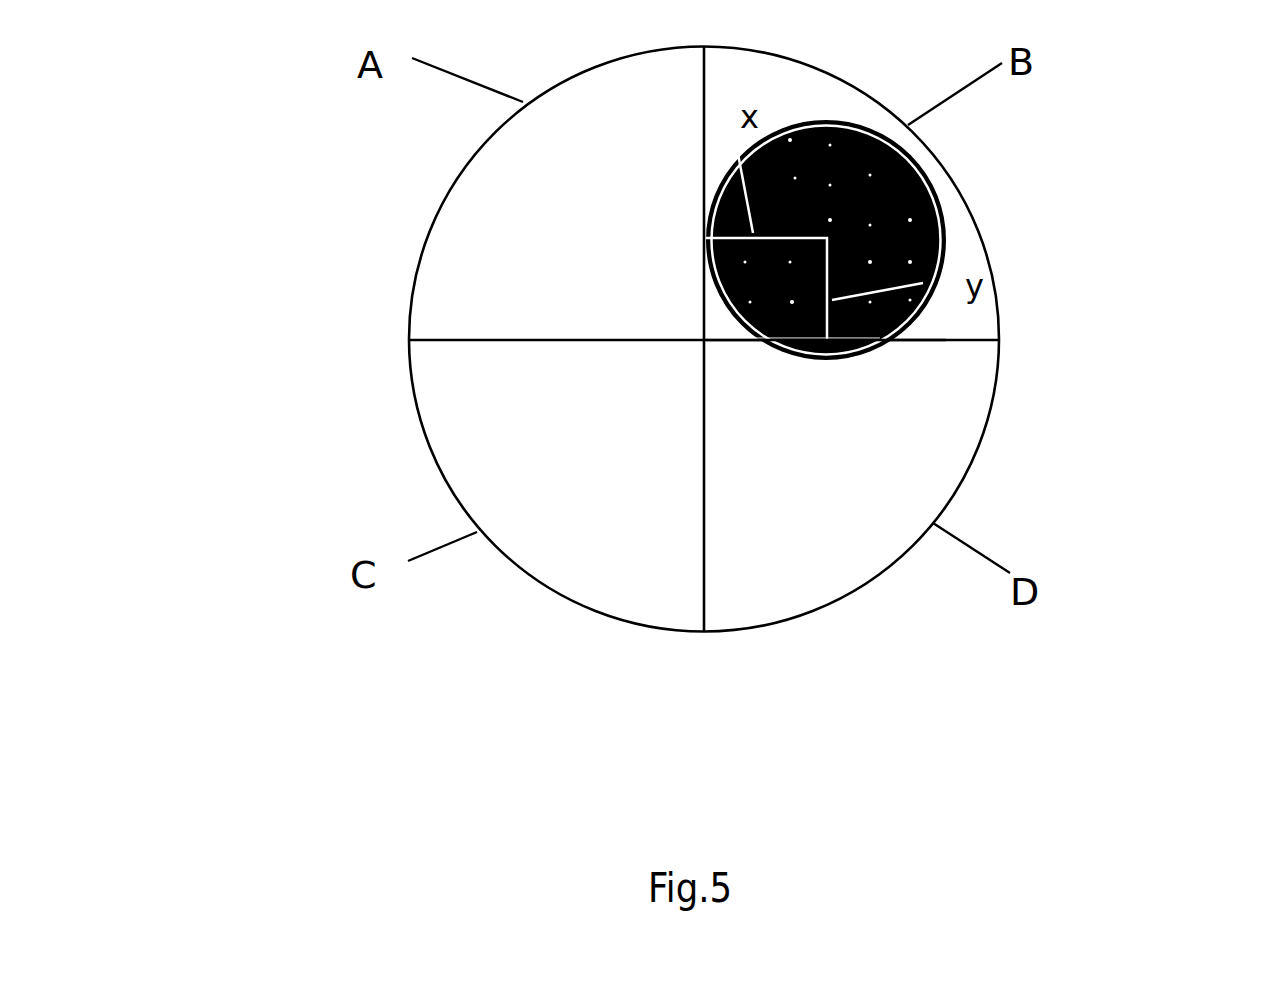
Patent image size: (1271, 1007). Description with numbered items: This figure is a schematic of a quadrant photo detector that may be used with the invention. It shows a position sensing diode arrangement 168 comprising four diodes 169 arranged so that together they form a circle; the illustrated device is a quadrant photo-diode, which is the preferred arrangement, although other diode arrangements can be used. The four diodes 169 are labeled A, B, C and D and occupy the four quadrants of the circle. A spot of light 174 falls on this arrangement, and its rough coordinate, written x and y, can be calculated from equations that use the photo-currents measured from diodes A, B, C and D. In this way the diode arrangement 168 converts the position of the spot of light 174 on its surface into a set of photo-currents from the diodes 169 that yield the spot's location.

The position sensing diode arrangement 168 is at (1005, 390).
The diodes 169 is at (785, 465).
The spot of light 174 is at (943, 208).